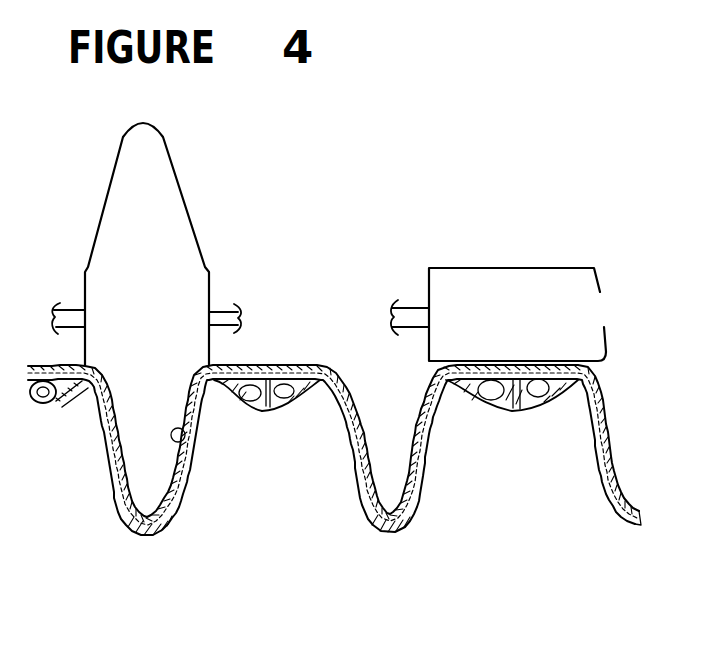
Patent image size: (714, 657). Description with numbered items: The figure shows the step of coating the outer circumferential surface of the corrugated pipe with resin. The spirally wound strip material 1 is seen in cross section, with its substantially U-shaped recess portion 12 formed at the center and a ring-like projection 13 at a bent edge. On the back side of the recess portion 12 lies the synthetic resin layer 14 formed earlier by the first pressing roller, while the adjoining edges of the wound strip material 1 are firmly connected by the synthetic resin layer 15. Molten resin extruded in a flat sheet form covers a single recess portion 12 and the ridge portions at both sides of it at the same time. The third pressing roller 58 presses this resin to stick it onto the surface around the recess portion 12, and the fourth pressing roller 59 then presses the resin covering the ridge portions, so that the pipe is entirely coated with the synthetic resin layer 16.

The strip material 1 is at (97, 434).
The recess portion 12 is at (196, 453).
The ring-like projection 13 is at (37, 401).
The synthetic resin layer 14 is at (170, 518).
The synthetic resin layer 15 is at (274, 366).
The synthetic resin layer 16 is at (218, 363).
The third pressing roller 58 is at (153, 240).
The fourth pressing roller 59 is at (500, 307).